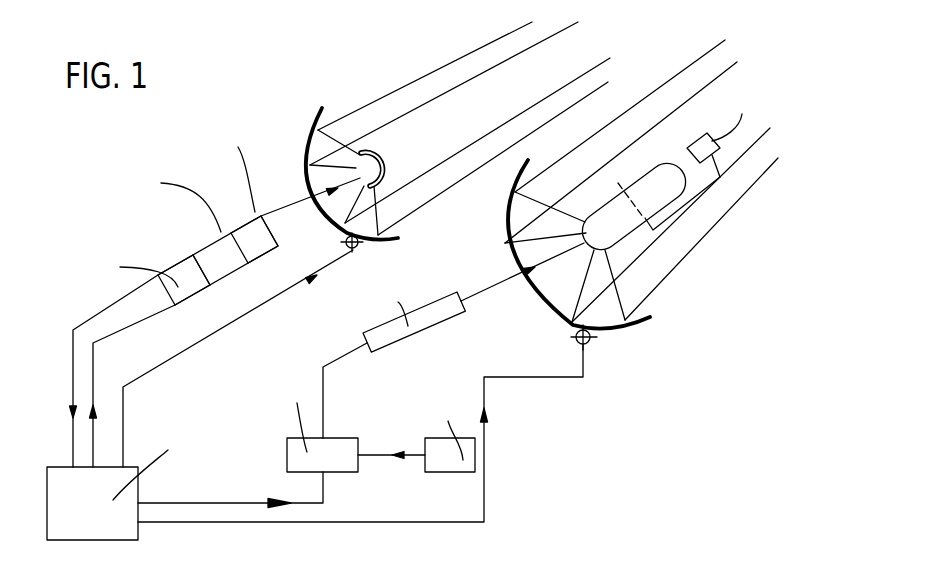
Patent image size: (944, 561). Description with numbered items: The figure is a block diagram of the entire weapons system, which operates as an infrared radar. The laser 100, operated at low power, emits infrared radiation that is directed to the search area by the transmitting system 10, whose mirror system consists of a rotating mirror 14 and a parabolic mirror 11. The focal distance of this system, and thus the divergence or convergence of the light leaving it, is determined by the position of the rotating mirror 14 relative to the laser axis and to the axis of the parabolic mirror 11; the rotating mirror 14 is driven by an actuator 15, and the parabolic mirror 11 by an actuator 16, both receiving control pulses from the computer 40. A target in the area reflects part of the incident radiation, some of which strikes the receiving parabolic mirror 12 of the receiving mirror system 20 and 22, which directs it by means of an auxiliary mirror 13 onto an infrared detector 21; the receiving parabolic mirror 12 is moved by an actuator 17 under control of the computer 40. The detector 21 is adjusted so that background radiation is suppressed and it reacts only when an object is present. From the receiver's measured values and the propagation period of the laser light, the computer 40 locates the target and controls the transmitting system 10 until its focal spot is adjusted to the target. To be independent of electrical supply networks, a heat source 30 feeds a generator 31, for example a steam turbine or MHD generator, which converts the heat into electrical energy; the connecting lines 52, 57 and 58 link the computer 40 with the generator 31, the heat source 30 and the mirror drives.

The transmitting system 10 is at (554, 382).
The parabolic mirror 11 is at (647, 321).
The receiving parabolic mirror 12 is at (321, 112).
The auxiliary mirror 13 is at (379, 160).
The rotating mirror 14 is at (620, 220).
The actuator 15 is at (703, 143).
The actuator 16 is at (590, 345).
The actuator 17 is at (349, 238).
The receiving mirror system 20 is at (197, 236).
The infrared detector 21 is at (250, 232).
The receiving mirror system 22 is at (182, 282).
The heat source 30 is at (416, 474).
The MHD generator 31 is at (308, 475).
The computer 40 is at (63, 481).
The signal line 52 is at (302, 405).
The control line to generator 57 is at (237, 516).
The control line to heat source and mirror 58 is at (360, 453).
The laser 100 is at (423, 318).